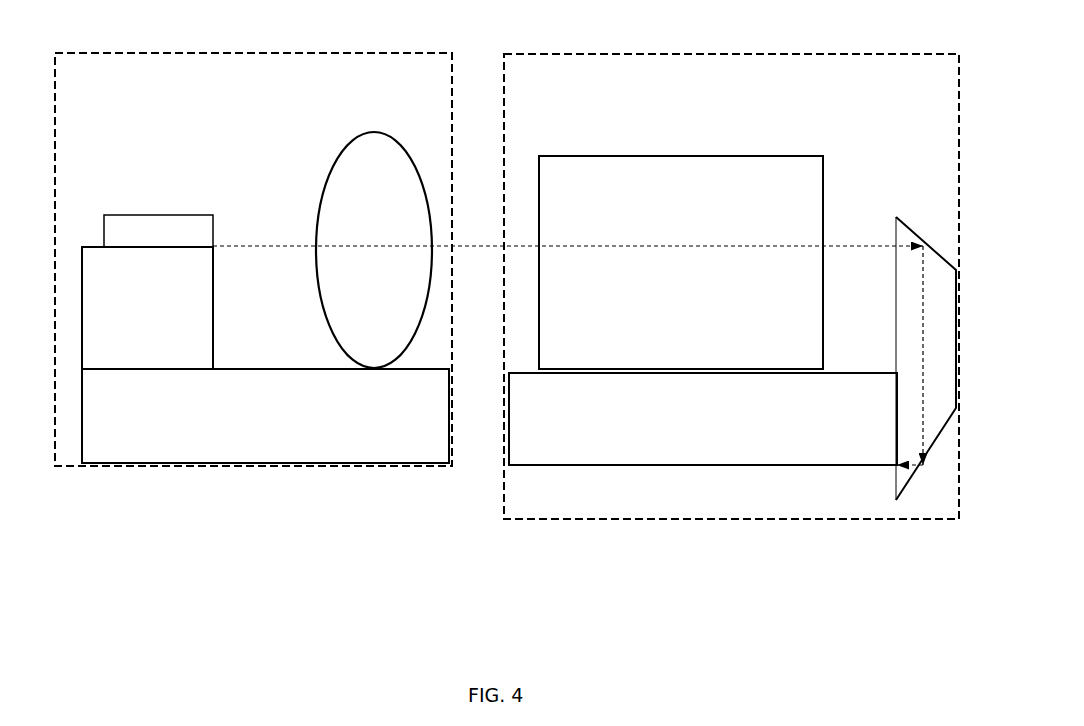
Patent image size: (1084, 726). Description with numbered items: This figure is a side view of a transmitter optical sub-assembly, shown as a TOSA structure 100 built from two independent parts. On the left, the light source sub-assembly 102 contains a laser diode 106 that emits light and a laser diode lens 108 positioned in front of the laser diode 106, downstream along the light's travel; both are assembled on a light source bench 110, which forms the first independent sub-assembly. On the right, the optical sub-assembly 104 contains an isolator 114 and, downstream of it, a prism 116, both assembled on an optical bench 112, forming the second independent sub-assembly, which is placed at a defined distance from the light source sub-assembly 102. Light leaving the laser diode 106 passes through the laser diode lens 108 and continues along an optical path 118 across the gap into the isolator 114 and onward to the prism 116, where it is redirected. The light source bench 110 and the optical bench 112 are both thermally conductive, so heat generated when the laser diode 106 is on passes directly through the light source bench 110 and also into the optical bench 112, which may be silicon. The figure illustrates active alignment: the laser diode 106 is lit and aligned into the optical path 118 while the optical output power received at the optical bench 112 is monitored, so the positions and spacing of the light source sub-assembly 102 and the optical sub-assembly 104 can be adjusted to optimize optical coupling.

The TOSA structure 100 is at (501, 313).
The light source sub-assembly 102 is at (247, 287).
The optical sub-assembly 104 is at (725, 328).
The laser diode 106 is at (150, 277).
The laser diode lens 108 is at (363, 319).
The light source bench 110 is at (137, 420).
The optical bench 112 is at (554, 434).
The isolator 114 is at (750, 338).
The prism 116 is at (943, 397).
The optical path 118 is at (640, 246).